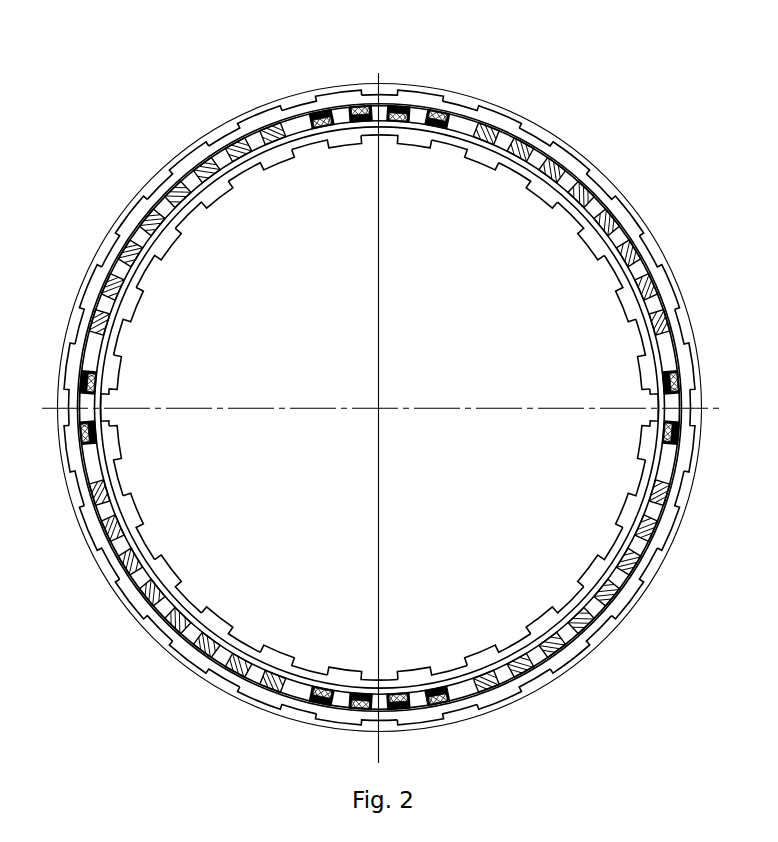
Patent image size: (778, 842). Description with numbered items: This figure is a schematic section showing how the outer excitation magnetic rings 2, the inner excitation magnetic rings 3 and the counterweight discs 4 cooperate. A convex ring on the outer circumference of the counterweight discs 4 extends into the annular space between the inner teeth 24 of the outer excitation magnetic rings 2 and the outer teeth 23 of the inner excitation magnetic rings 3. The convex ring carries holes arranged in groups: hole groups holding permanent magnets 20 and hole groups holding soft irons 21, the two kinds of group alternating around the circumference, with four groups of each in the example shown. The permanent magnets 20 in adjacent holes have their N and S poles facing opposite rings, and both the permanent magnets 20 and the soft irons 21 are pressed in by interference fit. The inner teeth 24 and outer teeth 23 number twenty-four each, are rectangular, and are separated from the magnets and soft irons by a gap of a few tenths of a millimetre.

The outer excitation magnetic rings 2 is at (350, 89).
The inner excitation magnetic rings 3 is at (550, 193).
The counterweight discs 4 is at (457, 117).
The permanent magnets 20 is at (325, 108).
The soft irons 21 is at (478, 130).
The outer teeth of the inner excitation magnetic rings 23 is at (247, 141).
The inner teeth of the outer excitation magnetic rings 24 is at (540, 137).